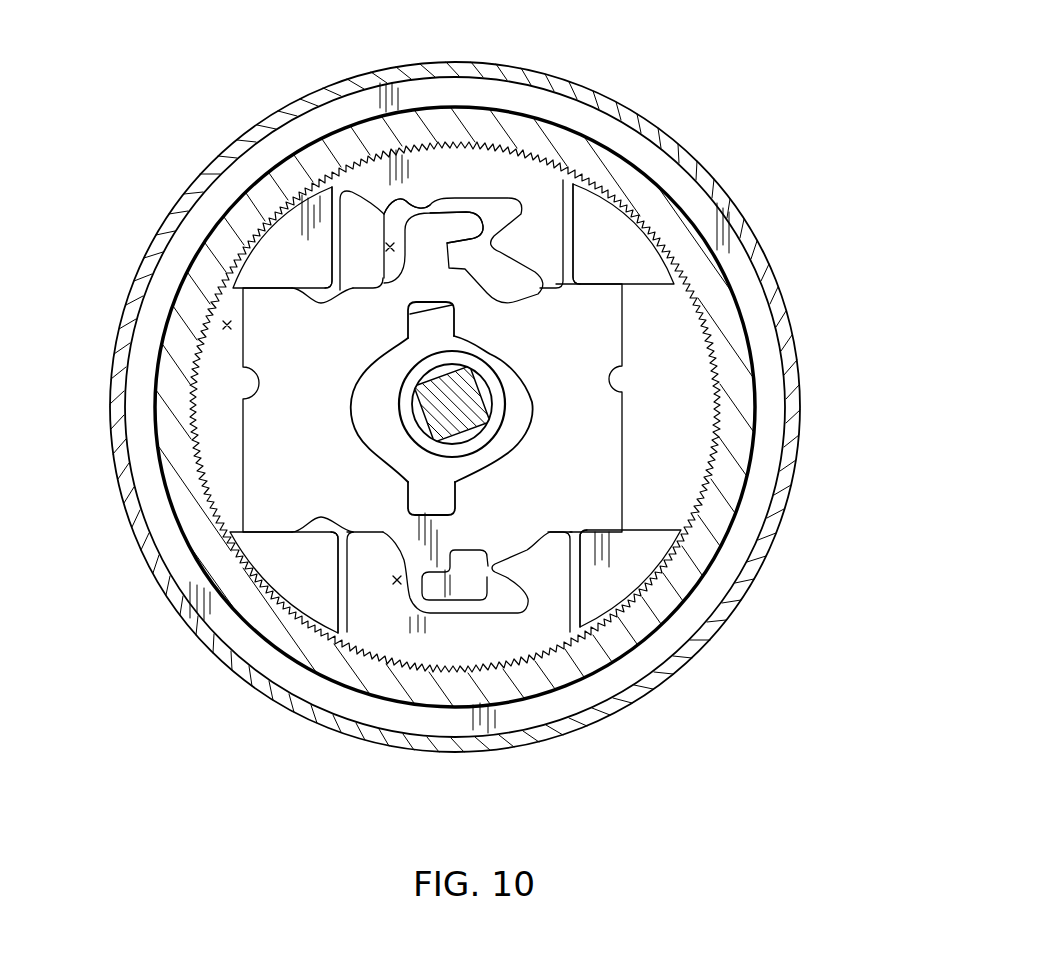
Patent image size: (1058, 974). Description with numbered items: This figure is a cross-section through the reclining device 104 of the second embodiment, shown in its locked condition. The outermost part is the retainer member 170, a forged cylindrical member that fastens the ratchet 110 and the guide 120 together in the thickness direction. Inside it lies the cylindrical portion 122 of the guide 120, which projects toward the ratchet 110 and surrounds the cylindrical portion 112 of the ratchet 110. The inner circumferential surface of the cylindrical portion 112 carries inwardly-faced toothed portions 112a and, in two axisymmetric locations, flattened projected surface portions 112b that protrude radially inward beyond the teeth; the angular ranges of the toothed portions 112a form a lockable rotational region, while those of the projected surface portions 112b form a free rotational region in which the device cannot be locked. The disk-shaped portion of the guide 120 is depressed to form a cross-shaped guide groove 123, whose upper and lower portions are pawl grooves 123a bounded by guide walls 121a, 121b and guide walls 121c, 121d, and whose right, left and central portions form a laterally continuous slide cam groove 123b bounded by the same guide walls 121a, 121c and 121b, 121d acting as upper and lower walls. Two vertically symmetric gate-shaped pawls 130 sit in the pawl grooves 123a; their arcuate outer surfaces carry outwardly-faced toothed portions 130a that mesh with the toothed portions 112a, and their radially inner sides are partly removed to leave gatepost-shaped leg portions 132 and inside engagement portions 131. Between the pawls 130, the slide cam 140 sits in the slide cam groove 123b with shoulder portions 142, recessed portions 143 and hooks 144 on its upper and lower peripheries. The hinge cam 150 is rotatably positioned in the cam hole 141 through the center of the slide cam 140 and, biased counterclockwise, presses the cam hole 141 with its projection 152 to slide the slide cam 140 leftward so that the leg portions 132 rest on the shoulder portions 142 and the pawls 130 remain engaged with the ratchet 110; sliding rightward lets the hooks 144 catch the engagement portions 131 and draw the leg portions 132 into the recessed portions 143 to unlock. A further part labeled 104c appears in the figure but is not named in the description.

The reclining device 104 is at (683, 62).
The drive shaft 104c is at (467, 414).
The ratchet 110 is at (454, 372).
The cylindrical portion 112 is at (350, 132).
The inwardly-faced toothed portions 112a is at (455, 403).
The projected surface portions 112b is at (623, 213).
The guide 120 is at (502, 407).
The cylindrical portion 122 is at (698, 209).
The guide groove 123 is at (228, 433).
The pawl grooves 123a is at (390, 247).
The slide cam groove 123b is at (227, 325).
The pawls 130 is at (455, 403).
The outwardly-faced toothed portions 130a is at (444, 668).
The engagement portions 131 is at (500, 240).
The leg portions 132 is at (362, 268).
The slide cam 140 is at (612, 408).
The cam hole 141 is at (443, 387).
The shoulder portions 142 is at (362, 297).
The recessed portions 143 is at (324, 299).
The hooks 144 is at (468, 227).
The hinge cam 150 is at (505, 382).
The projection 152 is at (431, 324).
The retainer member 170 is at (690, 151).
The guide wall 121a is at (642, 268).
The guide wall 121b is at (298, 255).
The guide wall 121c is at (619, 552).
The guide wall 121d is at (270, 542).